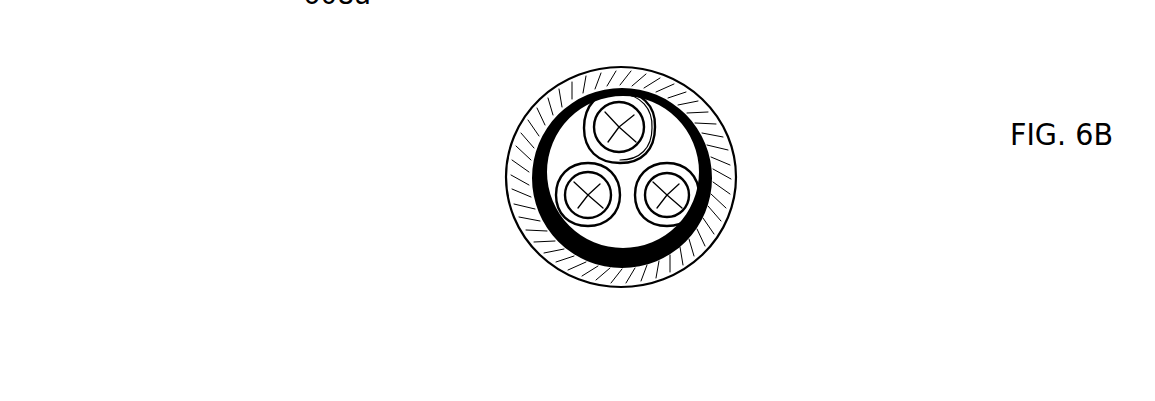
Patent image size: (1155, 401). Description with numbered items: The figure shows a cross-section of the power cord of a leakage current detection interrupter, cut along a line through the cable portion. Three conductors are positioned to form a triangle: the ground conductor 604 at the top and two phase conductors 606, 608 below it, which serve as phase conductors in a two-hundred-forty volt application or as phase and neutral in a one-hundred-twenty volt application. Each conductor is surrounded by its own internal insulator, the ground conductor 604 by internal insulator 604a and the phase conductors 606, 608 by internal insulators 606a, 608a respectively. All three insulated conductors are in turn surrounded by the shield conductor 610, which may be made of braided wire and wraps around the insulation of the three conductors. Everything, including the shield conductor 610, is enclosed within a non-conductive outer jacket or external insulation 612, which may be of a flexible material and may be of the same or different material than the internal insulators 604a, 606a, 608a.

The ground conductor 604 is at (619, 128).
The internal insulator 604a is at (652, 125).
The phase conductor 606 is at (590, 200).
The internal insulator 606a is at (560, 197).
The phase conductor 608 is at (667, 198).
The internal insulator 608a is at (677, 167).
The shield conductor 610 is at (712, 182).
The external insulation 612 is at (733, 220).